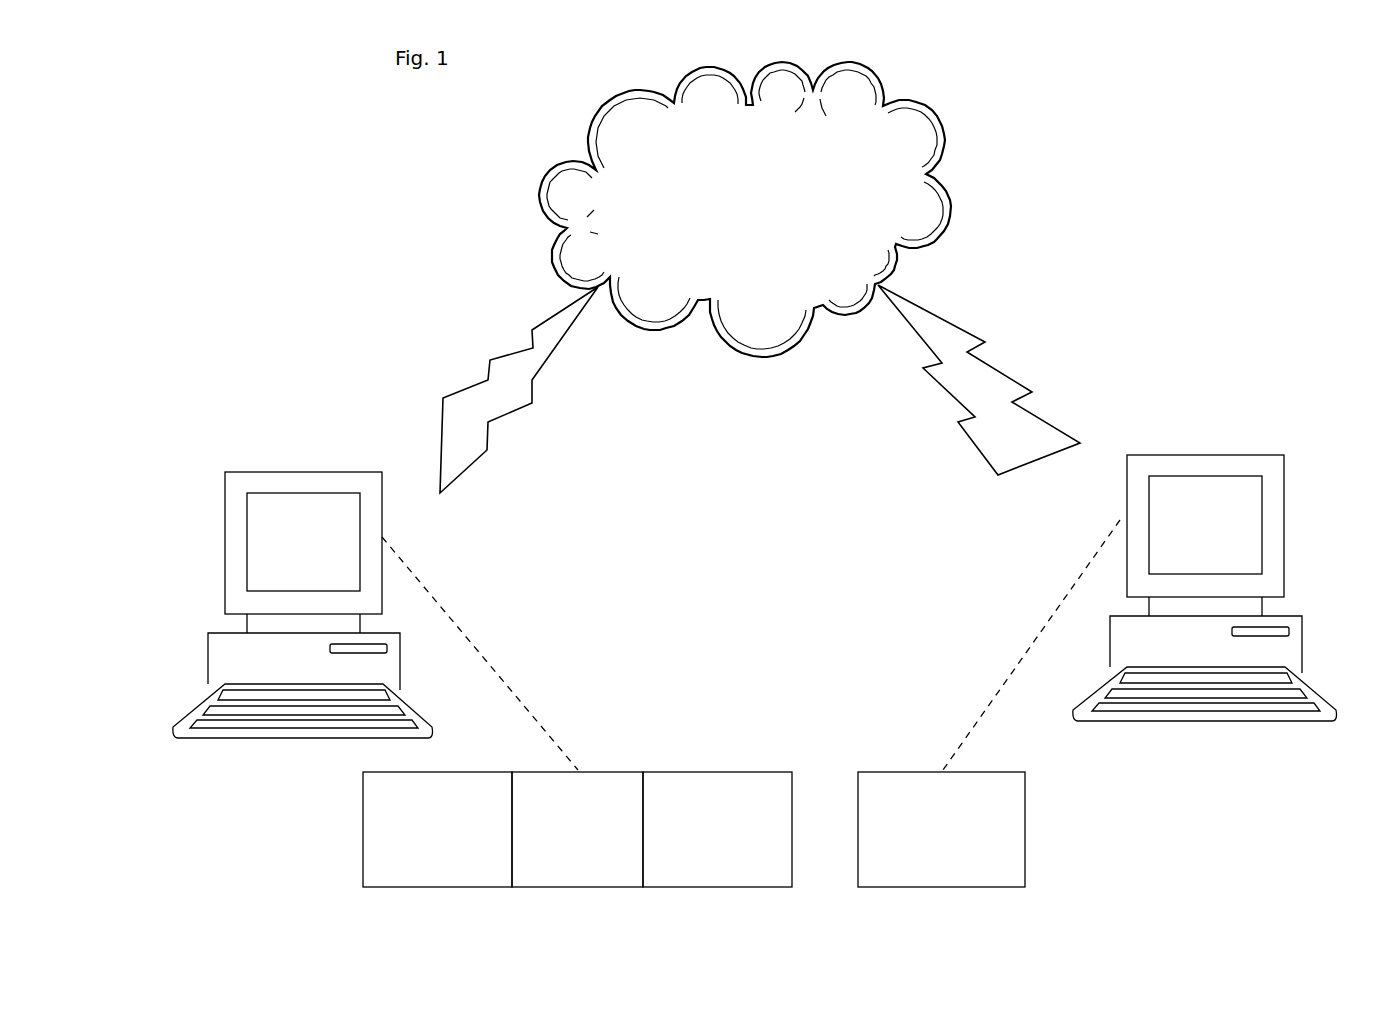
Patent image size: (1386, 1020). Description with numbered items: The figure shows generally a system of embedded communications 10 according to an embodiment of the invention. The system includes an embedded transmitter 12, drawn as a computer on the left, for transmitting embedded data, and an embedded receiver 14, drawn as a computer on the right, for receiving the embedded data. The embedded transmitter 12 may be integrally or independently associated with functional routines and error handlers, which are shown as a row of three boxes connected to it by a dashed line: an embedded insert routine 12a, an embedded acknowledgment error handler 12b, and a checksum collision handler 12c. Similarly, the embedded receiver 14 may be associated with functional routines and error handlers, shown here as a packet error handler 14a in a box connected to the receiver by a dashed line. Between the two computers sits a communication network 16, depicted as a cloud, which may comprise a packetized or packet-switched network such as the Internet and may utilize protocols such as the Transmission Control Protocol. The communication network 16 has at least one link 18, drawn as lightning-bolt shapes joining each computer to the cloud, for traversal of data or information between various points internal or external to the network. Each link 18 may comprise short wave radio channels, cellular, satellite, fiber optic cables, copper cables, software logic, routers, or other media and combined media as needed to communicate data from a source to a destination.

The system of embedded communications 10 is at (1043, 109).
The embedded transmitter 12 is at (375, 621).
The embedded insert routine 12a is at (437, 829).
The embedded acknowledgment error handler 12b is at (577, 829).
The checksum collision handler 12c is at (717, 829).
The embedded receiver 14 is at (1140, 612).
The packet error handler 14a is at (941, 829).
The communication network 16 is at (745, 209).
The link 18 is at (493, 368).